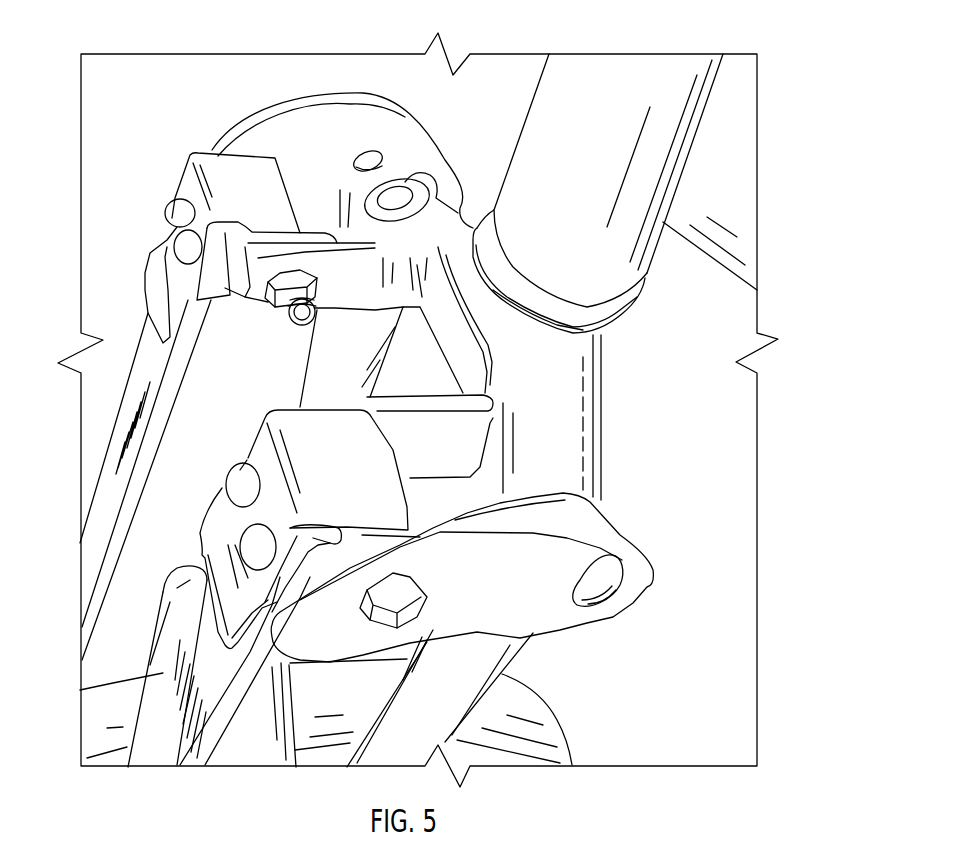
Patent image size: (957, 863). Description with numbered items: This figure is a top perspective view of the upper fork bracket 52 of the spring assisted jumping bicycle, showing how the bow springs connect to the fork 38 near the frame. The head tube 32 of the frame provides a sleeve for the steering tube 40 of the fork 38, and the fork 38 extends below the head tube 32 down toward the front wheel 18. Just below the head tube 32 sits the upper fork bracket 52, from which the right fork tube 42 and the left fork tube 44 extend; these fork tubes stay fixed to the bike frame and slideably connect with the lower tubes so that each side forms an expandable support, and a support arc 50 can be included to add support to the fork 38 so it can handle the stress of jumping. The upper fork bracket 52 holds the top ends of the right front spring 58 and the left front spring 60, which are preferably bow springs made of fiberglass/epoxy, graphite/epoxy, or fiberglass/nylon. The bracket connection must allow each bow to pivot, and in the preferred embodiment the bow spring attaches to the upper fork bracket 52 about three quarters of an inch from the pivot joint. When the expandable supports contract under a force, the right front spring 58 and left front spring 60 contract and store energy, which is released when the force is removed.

The front wheel 18 is at (110, 742).
The head tube 32 is at (637, 173).
The fork 38 is at (548, 633).
The steering tube 40 is at (595, 318).
The right fork tube 42 is at (343, 357).
The left fork tube 44 is at (442, 702).
The support arc 50 is at (183, 598).
The upper fork bracket 52 is at (413, 263).
The right front spring 58 is at (153, 380).
The left front spring 60 is at (207, 680).